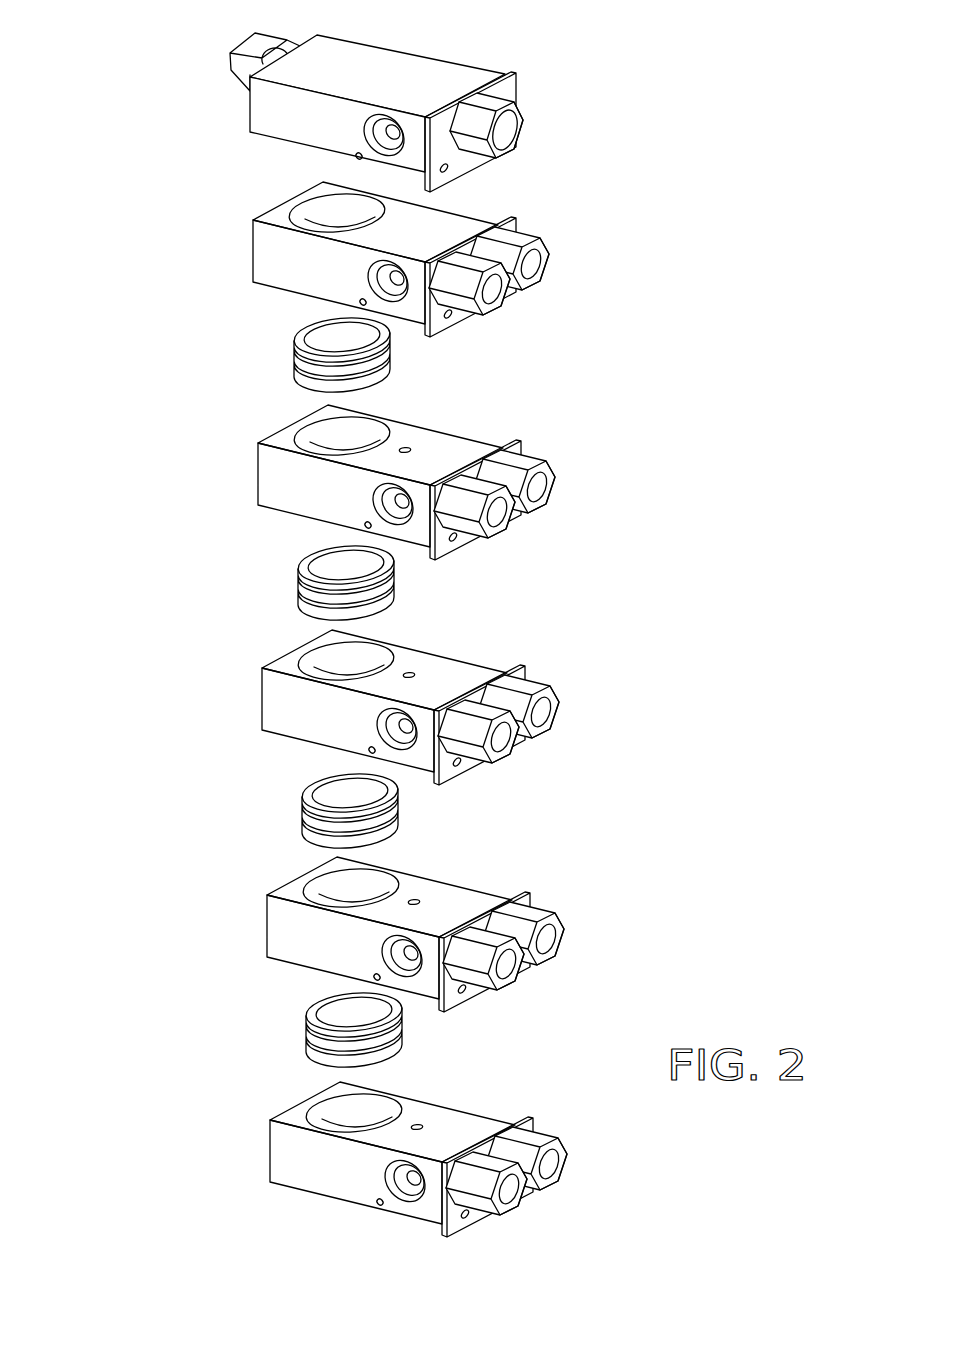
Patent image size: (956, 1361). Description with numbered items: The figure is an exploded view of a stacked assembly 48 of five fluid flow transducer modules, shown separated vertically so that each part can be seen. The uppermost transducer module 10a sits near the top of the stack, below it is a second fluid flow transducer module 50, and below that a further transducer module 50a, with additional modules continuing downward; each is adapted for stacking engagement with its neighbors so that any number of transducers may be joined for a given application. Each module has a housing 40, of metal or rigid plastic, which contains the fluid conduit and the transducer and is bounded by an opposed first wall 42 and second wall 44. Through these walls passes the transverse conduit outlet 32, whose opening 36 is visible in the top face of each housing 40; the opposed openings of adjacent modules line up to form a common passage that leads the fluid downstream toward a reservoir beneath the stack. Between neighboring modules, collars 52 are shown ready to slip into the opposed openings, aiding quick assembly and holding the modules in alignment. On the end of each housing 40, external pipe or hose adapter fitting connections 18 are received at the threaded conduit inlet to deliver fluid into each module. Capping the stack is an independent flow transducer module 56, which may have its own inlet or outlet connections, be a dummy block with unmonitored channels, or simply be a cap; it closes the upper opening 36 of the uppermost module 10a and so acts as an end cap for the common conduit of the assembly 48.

The uppermost transducer module 10a is at (606, 241).
The external pipe or hose adapter fitting connection 18 is at (552, 280).
The conduit outlet 32 is at (313, 216).
The opening 36 is at (311, 188).
The housing 40 is at (278, 497).
The first wall 42 is at (467, 225).
The second wall 44 is at (270, 284).
The assembly 48 is at (142, 467).
The second fluid flow transducer module 50 is at (613, 462).
The further transducer module 50a is at (617, 660).
The collar 52 is at (400, 801).
The independent flow transducer module 56 is at (393, 57).